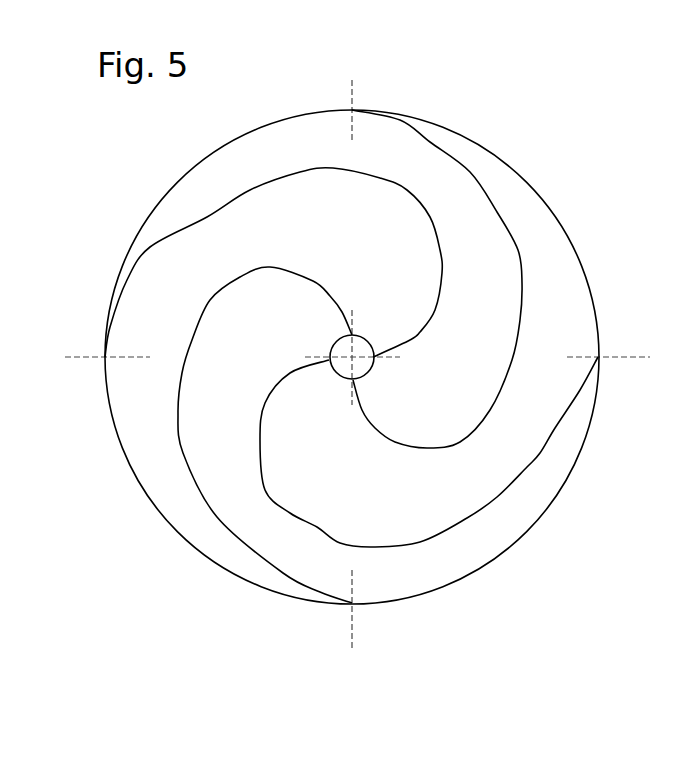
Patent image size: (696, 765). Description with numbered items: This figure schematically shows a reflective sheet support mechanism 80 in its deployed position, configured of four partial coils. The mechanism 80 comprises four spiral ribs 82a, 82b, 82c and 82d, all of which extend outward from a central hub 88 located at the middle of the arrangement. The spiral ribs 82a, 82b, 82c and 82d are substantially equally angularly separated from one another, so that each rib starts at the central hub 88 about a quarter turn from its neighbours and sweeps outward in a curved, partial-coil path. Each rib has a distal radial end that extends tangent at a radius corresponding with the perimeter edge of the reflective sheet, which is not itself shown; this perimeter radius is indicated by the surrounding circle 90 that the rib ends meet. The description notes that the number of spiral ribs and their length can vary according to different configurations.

The reflective sheet support mechanism 80 is at (220, 607).
The spiral rib 82a is at (480, 180).
The spiral rib 82b is at (467, 518).
The spiral rib 82c is at (180, 440).
The spiral rib 82d is at (207, 217).
The central hub 88 is at (373, 368).
The outer rim 90 is at (578, 461).